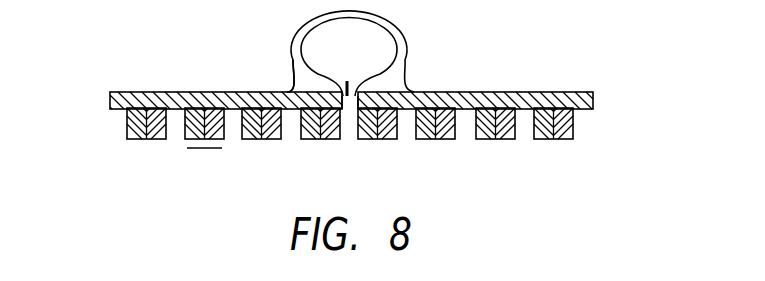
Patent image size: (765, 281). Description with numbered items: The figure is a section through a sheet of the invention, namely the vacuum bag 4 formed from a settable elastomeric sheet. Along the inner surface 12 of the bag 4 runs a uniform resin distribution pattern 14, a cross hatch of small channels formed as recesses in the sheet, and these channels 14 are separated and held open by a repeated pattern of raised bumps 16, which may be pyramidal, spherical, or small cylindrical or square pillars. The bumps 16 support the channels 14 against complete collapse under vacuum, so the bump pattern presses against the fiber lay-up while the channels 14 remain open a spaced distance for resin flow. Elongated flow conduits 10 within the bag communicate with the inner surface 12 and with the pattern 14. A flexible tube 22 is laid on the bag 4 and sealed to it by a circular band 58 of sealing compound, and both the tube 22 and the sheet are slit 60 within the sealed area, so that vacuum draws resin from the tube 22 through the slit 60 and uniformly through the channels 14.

The vacuum bag 4 is at (109, 95).
The elongated flow conduits 10 is at (352, 112).
The inner surface 12 is at (203, 149).
The resin distribution pattern 14 is at (175, 137).
The bumps 16 is at (146, 139).
The flexible tube 22 is at (294, 38).
The circular band of sealing compound 58 is at (287, 91).
The slit 60 is at (348, 80).